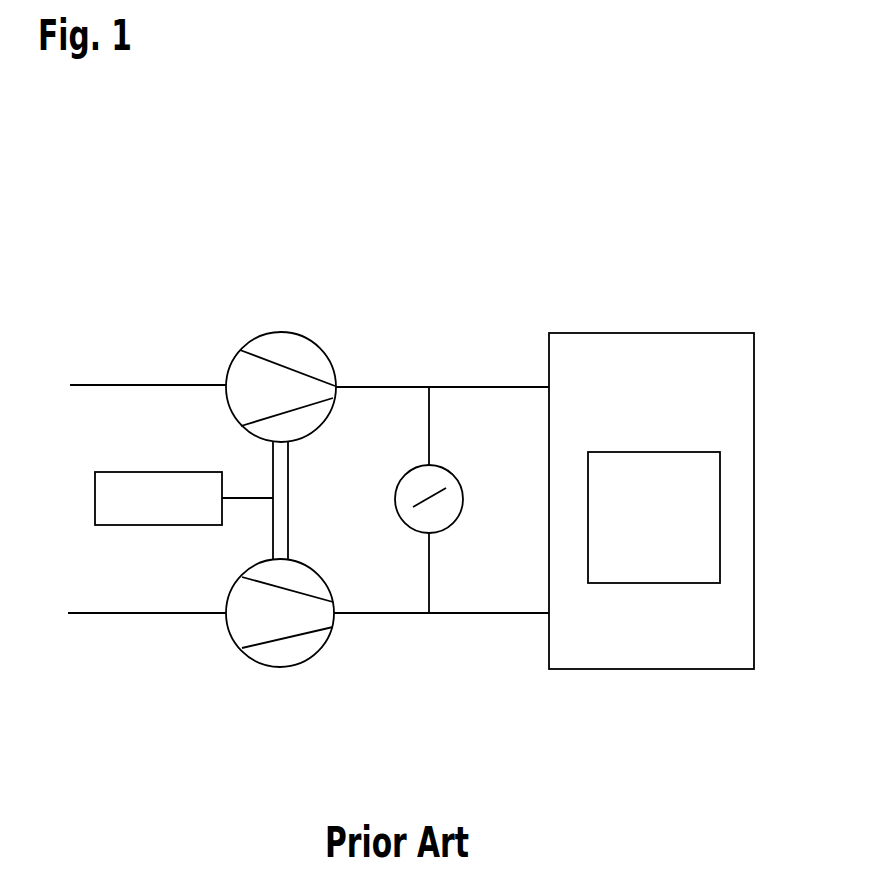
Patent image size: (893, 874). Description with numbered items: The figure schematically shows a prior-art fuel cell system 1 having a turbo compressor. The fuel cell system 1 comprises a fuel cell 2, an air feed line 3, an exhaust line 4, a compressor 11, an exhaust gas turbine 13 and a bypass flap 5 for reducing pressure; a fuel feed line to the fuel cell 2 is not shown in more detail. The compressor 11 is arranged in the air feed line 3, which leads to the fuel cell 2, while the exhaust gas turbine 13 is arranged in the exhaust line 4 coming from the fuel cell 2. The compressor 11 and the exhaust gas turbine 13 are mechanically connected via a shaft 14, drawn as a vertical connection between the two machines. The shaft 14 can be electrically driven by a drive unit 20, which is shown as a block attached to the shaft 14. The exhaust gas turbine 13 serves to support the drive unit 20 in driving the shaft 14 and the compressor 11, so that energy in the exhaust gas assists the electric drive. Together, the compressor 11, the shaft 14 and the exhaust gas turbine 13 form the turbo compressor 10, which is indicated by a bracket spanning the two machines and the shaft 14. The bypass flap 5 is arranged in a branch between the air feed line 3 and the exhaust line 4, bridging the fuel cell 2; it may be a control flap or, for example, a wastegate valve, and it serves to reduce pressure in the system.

The fuel cell system 1 is at (557, 223).
The fuel cell 2 is at (655, 452).
The air feed line 3 is at (137, 385).
The exhaust line 4 is at (136, 613).
The bypass flap 5 is at (460, 512).
The turbo compressor 10 is at (350, 603).
The compressor 11 is at (282, 332).
The exhaust gas turbine 13 is at (281, 667).
The shaft 14 is at (272, 463).
The drive unit 20 is at (135, 525).